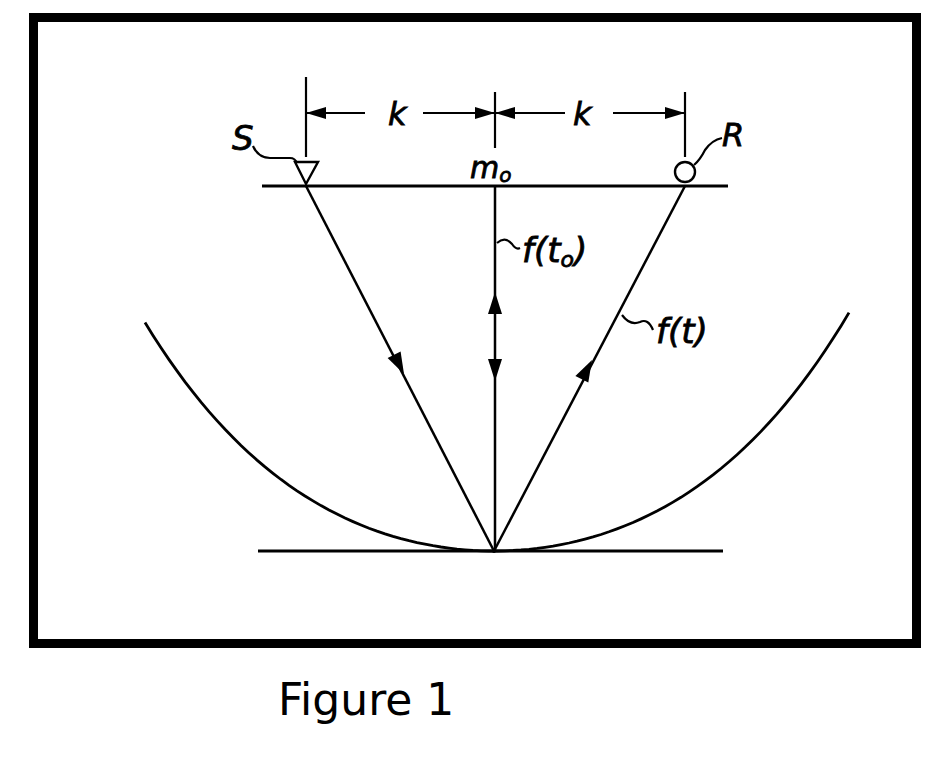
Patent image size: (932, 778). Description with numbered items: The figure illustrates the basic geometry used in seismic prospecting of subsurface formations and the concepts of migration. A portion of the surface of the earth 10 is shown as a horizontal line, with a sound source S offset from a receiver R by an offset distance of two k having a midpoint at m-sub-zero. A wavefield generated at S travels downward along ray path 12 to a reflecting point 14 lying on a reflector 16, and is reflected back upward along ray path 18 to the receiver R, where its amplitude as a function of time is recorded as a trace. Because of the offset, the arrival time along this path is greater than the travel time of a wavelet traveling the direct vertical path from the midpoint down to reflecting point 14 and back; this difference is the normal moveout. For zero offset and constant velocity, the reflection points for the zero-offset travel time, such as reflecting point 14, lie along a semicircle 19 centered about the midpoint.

The surface of the earth 10 is at (710, 186).
The ray path 12 is at (425, 422).
The reflecting point 14 is at (494, 553).
The reflector 16 is at (713, 551).
The ray path 18 is at (565, 415).
The semicircle 19 is at (803, 397).